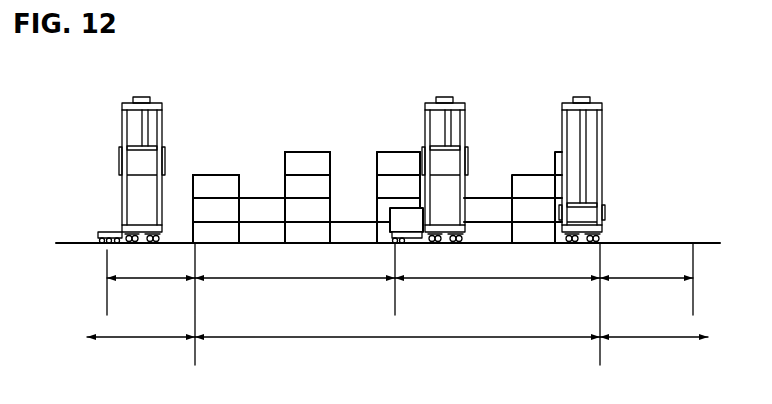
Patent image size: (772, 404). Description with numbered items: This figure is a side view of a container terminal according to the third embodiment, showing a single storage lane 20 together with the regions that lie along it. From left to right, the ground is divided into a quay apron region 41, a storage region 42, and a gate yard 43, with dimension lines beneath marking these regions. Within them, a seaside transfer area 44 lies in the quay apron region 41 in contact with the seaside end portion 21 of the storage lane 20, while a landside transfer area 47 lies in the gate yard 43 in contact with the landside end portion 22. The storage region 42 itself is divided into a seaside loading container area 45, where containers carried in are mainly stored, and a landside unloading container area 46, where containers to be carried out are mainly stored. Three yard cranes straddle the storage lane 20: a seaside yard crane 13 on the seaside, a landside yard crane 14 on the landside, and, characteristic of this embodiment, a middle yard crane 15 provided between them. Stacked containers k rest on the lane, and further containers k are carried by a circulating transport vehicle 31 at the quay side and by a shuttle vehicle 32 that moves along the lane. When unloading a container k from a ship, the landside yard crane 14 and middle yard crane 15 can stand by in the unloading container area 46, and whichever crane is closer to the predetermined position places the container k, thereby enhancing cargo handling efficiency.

The seaside yard crane 13 is at (155, 102).
The landside yard crane 14 is at (588, 102).
The middle yard crane 15 is at (450, 103).
The storage lane 20 is at (386, 123).
The seaside end portion 21 is at (191, 190).
The landside end portion 22 is at (603, 156).
The circulating transport vehicle 31 is at (108, 232).
The shuttle vehicle 32 is at (410, 238).
The container k is at (227, 187).
The quay apron region 41 is at (114, 340).
The storage region 42 is at (380, 340).
The gate yard 43 is at (641, 340).
The seaside transfer area 44 is at (136, 280).
The seaside loading container area 45 is at (302, 281).
The landside unloading container area 46 is at (478, 281).
The landside transfer area 47 is at (636, 281).